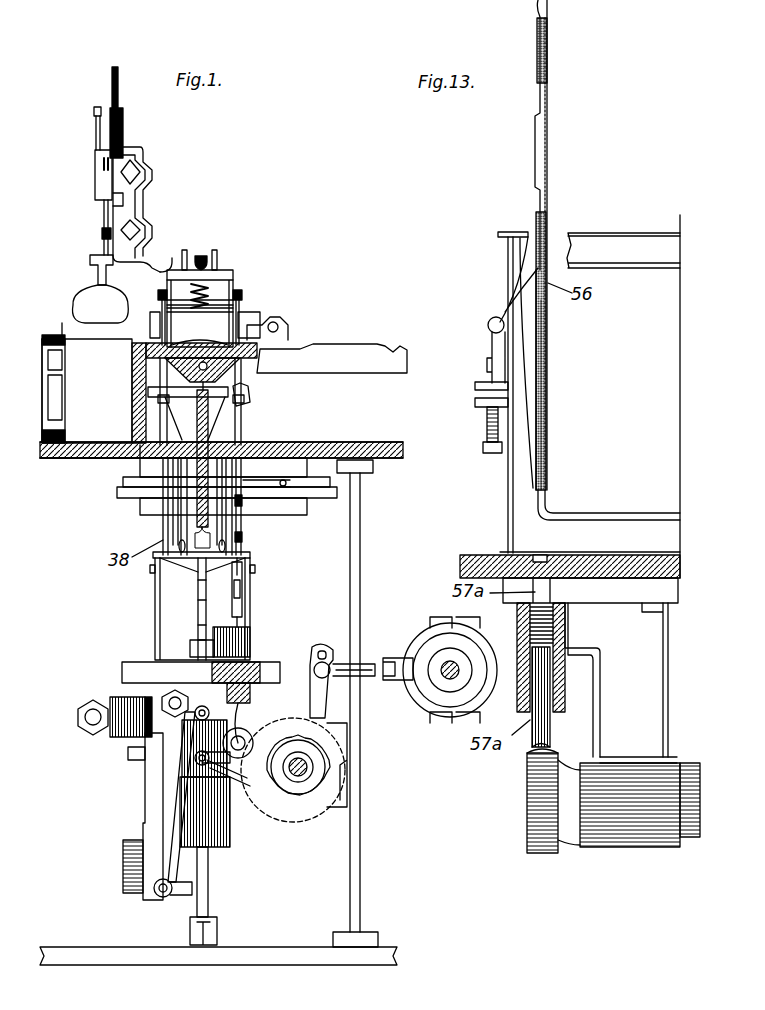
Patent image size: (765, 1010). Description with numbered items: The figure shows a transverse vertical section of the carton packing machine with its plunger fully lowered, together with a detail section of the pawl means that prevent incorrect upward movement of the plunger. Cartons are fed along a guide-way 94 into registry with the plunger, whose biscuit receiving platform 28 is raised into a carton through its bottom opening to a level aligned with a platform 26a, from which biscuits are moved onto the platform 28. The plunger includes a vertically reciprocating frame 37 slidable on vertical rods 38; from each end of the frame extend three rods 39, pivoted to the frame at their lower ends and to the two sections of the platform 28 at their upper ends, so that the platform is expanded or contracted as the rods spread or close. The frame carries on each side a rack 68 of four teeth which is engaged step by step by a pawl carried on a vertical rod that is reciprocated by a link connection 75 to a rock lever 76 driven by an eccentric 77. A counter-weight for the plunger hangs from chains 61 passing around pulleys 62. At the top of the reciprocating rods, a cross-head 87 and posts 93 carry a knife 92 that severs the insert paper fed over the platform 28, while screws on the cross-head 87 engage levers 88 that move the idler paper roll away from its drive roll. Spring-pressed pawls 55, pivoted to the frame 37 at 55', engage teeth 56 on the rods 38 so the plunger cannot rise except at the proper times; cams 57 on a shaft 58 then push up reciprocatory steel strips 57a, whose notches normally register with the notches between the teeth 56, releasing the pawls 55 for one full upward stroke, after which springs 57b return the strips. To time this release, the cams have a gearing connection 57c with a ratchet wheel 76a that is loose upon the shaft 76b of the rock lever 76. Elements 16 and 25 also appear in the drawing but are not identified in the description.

In FIG. 1, the valve body 16 is at (193, 267).
In FIG. 1, the operating lever 25 is at (73, 307).
In FIG. 1, the knife 92 is at (220, 327).
In FIG. 1, the posts 93 is at (262, 322).
In FIG. 1, the platform 26a is at (90, 341).
In FIG. 1, the cross-head 87 is at (148, 391).
In FIG. 1, the levers 88 is at (250, 397).
In FIG. 1, the platform 28 is at (180, 447).
In FIG. 1, the vertical rods 38 is at (280, 440).
In FIG. 13, the vertical rods 38 is at (542, 462).
In FIG. 1, the guide-way 94 is at (97, 430).
In FIG. 1, the rods 39 is at (173, 525).
In FIG. 1, the teeth 56 is at (243, 530).
In FIG. 13, the teeth 56 is at (548, 57).
In FIG. 1, the spring-pressed pawls 55 is at (258, 586).
In FIG. 13, the spring-pressed pawls 55 is at (489, 277).
In FIG. 13, the pivot 55' is at (473, 385).
In FIG. 1, the frame 37 is at (202, 606).
In FIG. 13, the frame 37 is at (517, 510).
In FIG. 1, the rack 68 is at (203, 607).
In FIG. 1, the pulleys 62 is at (153, 703).
In FIG. 1, the chains 61 is at (145, 733).
In FIG. 1, the link connection 75 is at (197, 738).
In FIG. 1, the cams 57 is at (240, 730).
In FIG. 13, the cams 57 is at (528, 777).
In FIG. 13, the steel strips 57a is at (535, 153).
In FIG. 13, the springs 57b is at (567, 637).
In FIG. 1, the gearing connection 57c is at (330, 817).
In FIG. 1, the shaft 58 is at (237, 758).
In FIG. 13, the shaft 58 is at (687, 837).
In FIG. 1, the rock lever 76 is at (260, 767).
In FIG. 1, the ratchet wheel 76a is at (325, 775).
In FIG. 1, the shaft 76b is at (303, 777).
In FIG. 1, the eccentric 77 is at (427, 687).